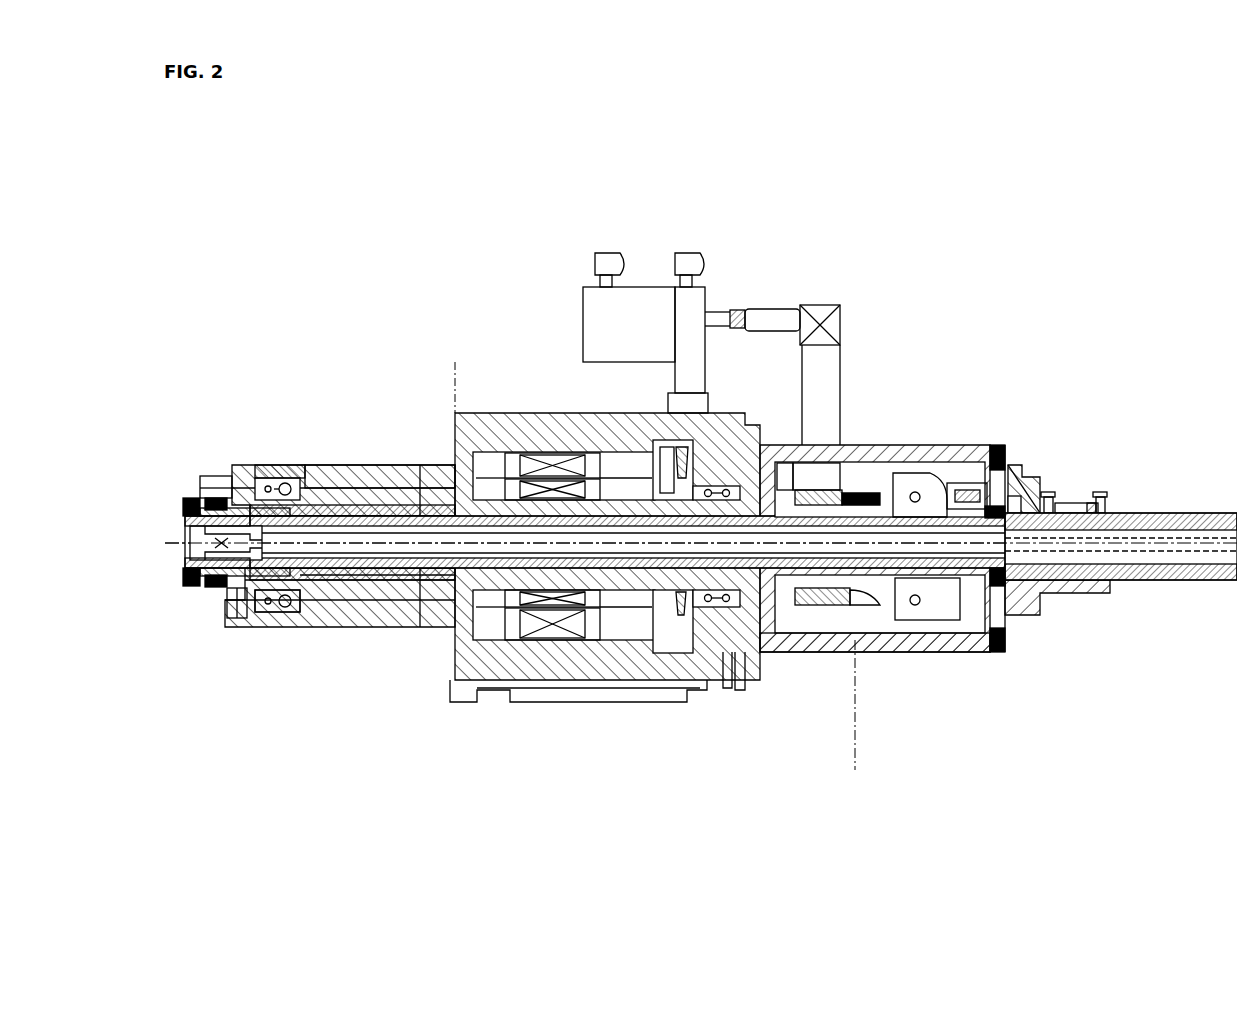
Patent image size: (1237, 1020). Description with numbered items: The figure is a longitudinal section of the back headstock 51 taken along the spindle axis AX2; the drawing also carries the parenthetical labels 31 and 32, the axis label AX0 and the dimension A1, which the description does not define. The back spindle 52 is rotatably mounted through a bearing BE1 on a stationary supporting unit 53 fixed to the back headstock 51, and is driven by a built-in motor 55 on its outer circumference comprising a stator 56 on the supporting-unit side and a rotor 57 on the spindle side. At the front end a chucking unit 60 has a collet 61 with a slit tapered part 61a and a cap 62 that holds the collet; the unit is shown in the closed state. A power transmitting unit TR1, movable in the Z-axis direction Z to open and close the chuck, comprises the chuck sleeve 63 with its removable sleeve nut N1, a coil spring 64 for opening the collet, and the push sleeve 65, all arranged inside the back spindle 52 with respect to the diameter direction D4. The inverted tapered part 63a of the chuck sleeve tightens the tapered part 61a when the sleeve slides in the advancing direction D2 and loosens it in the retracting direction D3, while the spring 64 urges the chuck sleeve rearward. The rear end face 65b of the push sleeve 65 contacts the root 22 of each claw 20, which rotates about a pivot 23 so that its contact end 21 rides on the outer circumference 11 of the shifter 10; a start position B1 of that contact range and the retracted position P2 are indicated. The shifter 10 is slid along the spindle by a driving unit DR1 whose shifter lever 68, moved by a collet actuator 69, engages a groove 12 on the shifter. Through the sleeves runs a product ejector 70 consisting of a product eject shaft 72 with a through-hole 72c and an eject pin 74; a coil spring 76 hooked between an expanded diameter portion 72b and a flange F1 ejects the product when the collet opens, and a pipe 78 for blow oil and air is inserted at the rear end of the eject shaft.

The back headstock 51 is at (452, 690).
The housing 31 is at (555, 640).
The back spindle 52 is at (388, 590).
The housing 32 is at (377, 603).
The supporting unit 53 is at (288, 465).
The bearing BE1 is at (283, 483).
The chuck sleeve 63 is at (300, 470).
The inverted tapered part 63a is at (212, 498).
The sleeve nut N1 is at (340, 470).
The expanded diameter portion 72b is at (410, 508).
The coil spring for ejecting a product 76 is at (440, 500).
The coil spring for opening the collet 64 is at (305, 606).
The power transmitting unit TR1 is at (336, 582).
The axis AX0 is at (701, 442).
The spindle axis AX2 is at (454, 376).
The chucking unit 60 is at (215, 602).
The collet 61 is at (187, 498).
The tapered part 61a is at (222, 498).
The cap 62 is at (196, 586).
The eject pin 74 is at (192, 590).
The product ejector 70 is at (245, 512).
The built-in motor 55 is at (564, 466).
The rotor 57 is at (548, 480).
The stator 56 is at (566, 480).
The push sleeve 65 is at (640, 445).
The outer circumference 11 is at (880, 470).
The groove 12 is at (812, 493).
The contact end 21 is at (852, 492).
The root 22 is at (895, 512).
The pivot 23 is at (918, 492).
The rear end face 65b is at (935, 490).
The retracted position P2 is at (822, 602).
The shifter 10 is at (845, 612).
The through-hole 72c is at (882, 606).
The claw 20 is at (912, 622).
The product eject shaft 72 is at (782, 636).
The start position B1 is at (726, 668).
The flange F1 is at (1018, 482).
The pipe 78 is at (1158, 566).
The collet actuator 69 is at (662, 287).
The shifter lever 68 is at (843, 382).
The driving unit DR1 is at (796, 264).
The advancing direction D2 is at (630, 742).
The retracting direction D3 is at (515, 742).
The Z-axis direction Z is at (572, 768).
The distance A1 is at (853, 766).
The diameter direction D4 is at (963, 660).